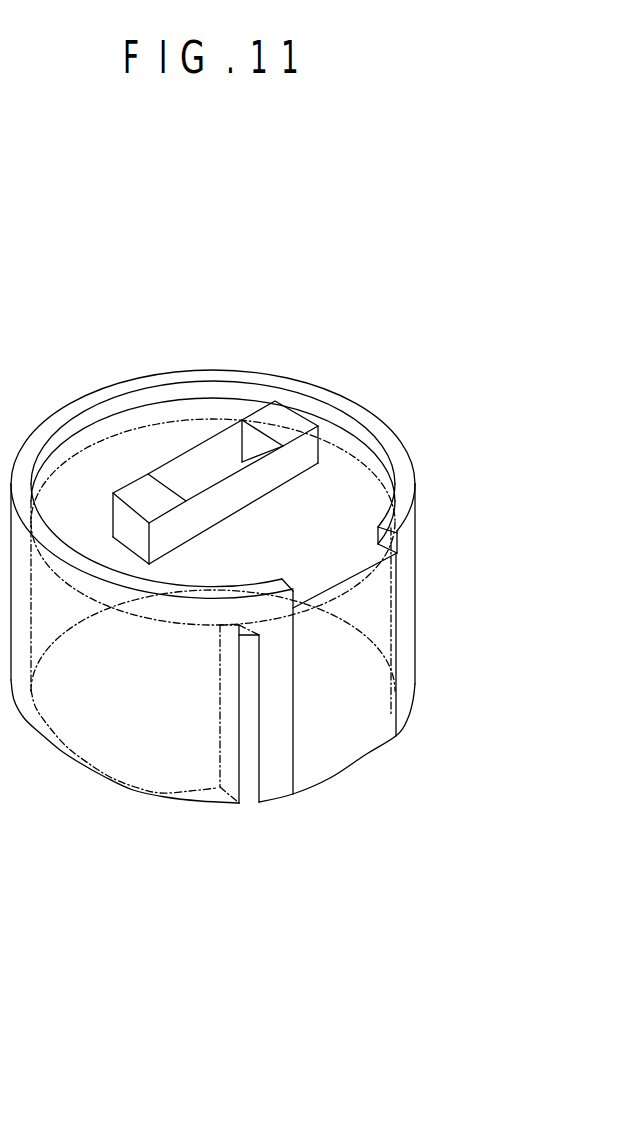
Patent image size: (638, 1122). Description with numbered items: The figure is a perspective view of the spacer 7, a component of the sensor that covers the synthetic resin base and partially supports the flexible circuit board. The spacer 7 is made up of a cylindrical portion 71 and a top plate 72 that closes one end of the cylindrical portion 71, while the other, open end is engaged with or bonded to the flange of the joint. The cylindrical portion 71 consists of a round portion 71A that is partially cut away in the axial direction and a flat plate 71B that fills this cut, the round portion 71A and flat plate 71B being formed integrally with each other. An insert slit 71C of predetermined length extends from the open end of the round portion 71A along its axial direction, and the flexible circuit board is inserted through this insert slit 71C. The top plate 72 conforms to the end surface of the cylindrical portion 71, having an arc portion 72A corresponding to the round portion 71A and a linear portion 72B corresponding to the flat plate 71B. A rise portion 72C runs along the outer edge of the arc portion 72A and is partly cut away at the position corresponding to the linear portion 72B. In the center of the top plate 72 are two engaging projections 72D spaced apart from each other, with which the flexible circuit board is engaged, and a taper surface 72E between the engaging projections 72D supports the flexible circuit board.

The spacer 7 is at (424, 412).
The cylindrical portion 71 is at (203, 853).
The round portion 71A is at (277, 772).
The flat plate 71B is at (347, 737).
The insert slit 71C is at (247, 698).
The top plate 72 is at (106, 455).
The arc portion 72A is at (170, 398).
The linear portion 72B is at (352, 583).
The rise portion 72C is at (340, 398).
The engaging projections 72D is at (142, 492).
The taper surface 72E is at (218, 477).